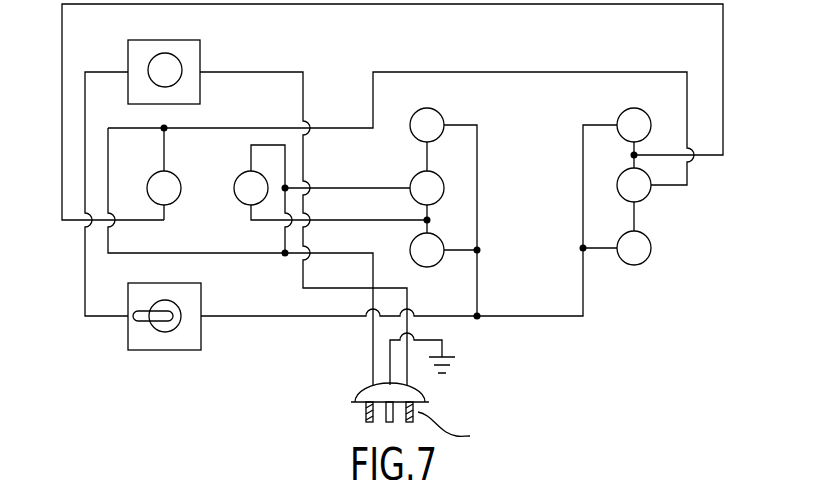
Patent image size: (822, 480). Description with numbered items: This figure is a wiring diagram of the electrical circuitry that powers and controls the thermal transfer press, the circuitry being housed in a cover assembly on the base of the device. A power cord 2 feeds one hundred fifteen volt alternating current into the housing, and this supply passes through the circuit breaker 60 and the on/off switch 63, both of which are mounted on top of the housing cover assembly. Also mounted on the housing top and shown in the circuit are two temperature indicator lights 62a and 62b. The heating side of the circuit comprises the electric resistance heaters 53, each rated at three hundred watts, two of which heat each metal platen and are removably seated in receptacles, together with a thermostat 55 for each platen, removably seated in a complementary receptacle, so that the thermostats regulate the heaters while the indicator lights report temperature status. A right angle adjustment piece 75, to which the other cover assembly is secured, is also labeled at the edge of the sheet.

The circuit breaker 60 is at (178, 42).
The temperature indicator light 62a is at (176, 179).
The temperature indicator light 62b is at (240, 201).
The electric resistance heater 53 is at (436, 139).
The thermostat 55 is at (436, 202).
The on/off switch 63 is at (185, 340).
The power cord 2 is at (421, 387).
The right angle adjustment piece 75 is at (232, 479).